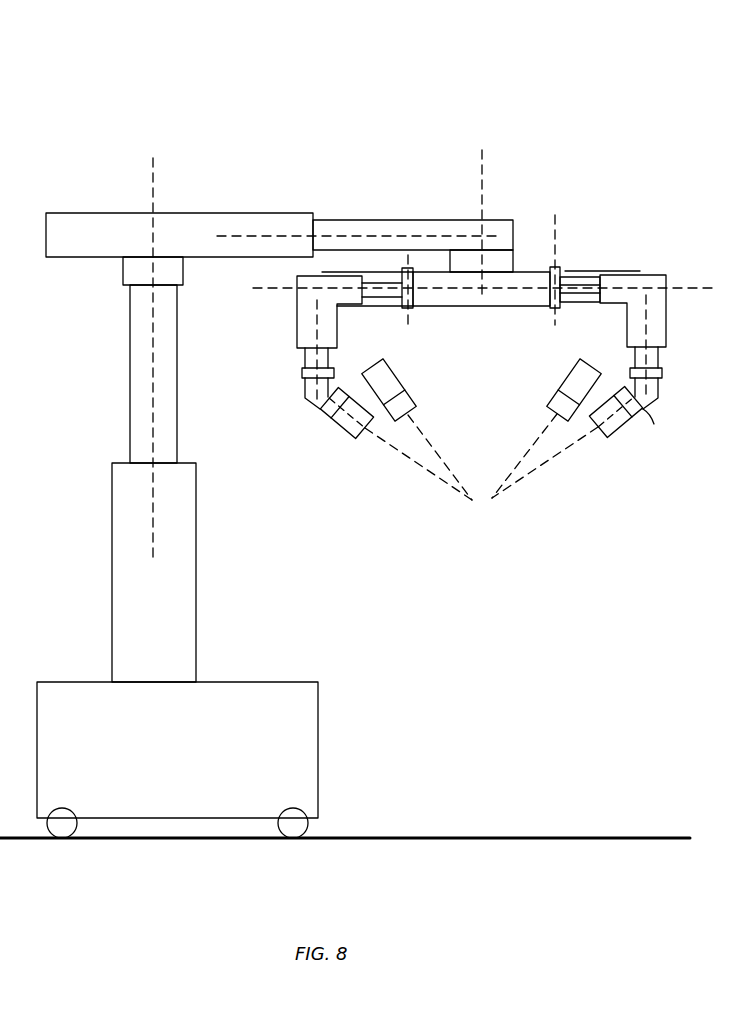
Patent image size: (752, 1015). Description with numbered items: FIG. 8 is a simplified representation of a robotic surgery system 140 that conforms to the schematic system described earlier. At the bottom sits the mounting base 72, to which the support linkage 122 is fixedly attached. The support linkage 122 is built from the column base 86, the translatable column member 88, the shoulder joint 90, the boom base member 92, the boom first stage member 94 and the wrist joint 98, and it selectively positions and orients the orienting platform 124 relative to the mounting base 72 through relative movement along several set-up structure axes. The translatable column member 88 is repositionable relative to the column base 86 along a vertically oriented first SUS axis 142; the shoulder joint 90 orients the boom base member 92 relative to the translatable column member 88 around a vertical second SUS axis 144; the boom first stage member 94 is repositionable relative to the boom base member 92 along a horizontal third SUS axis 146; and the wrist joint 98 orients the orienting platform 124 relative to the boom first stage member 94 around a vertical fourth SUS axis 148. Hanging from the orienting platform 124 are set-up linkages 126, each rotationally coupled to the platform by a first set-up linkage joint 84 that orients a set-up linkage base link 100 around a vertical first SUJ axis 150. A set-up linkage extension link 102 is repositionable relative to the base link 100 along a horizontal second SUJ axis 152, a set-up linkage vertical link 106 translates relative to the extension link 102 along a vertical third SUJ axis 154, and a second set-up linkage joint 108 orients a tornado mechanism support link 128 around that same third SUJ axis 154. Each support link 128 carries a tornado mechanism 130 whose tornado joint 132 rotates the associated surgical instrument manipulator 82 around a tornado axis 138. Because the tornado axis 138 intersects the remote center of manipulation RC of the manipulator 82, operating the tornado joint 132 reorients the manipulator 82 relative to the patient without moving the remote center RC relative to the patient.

The mounting base 72 is at (191, 760).
The surgical instrument manipulator 82 is at (417, 396).
The first set-up linkage joint 84 is at (562, 266).
The column base 86 is at (170, 625).
The translatable column member 88 is at (166, 365).
The shoulder joint 90 is at (123, 272).
The boom base member 92 is at (95, 246).
The boom first stage member 94 is at (459, 246).
The wrist joint 98 is at (513, 260).
The set-up linkage base link 100 is at (600, 271).
The set-up linkage extension link 102 is at (662, 273).
The set-up linkage vertical link 106 is at (660, 356).
The second set-up linkage joint 108 is at (662, 380).
The support linkage 122 is at (95, 140).
The orienting platform 124 is at (468, 303).
The set-up linkage 126 is at (375, 342).
The tornado mechanism support link 128 is at (660, 402).
The tornado mechanism 130 is at (333, 462).
The tornado joint 132 is at (641, 420).
The tornado axis 138 is at (553, 455).
The robotic surgery system 140 is at (500, 70).
The first set-up structure axis 142 is at (130, 420).
The second set-up structure axis 144 is at (152, 193).
The third set-up structure axis 146 is at (288, 234).
The fourth set-up structure axis 148 is at (482, 185).
The first set-up joint axis 150 is at (556, 250).
The second set-up joint axis 152 is at (668, 290).
The third set-up joint axis 154 is at (640, 312).
The remote center of manipulation RC is at (497, 503).